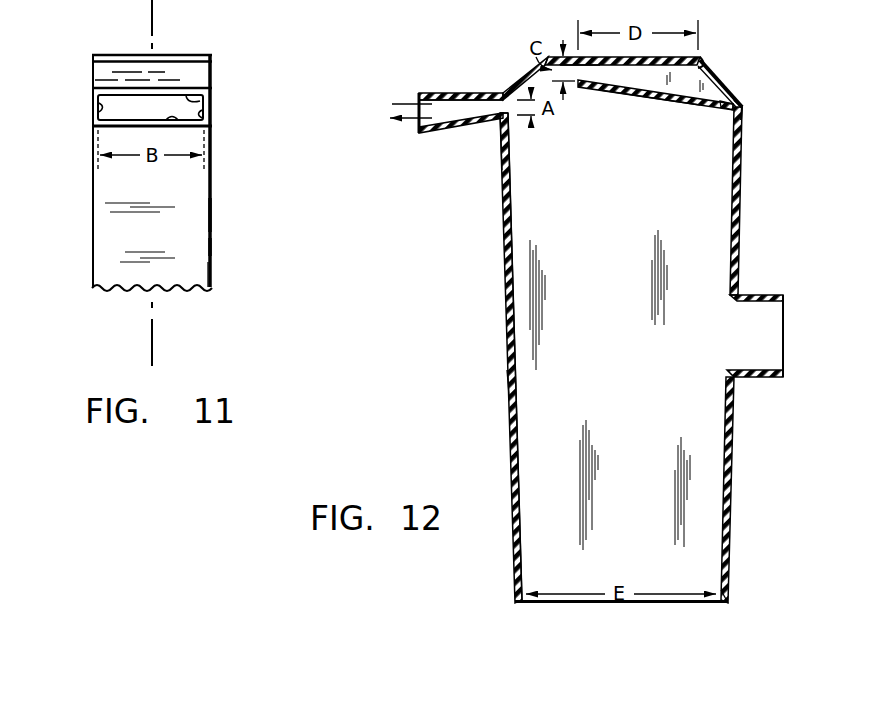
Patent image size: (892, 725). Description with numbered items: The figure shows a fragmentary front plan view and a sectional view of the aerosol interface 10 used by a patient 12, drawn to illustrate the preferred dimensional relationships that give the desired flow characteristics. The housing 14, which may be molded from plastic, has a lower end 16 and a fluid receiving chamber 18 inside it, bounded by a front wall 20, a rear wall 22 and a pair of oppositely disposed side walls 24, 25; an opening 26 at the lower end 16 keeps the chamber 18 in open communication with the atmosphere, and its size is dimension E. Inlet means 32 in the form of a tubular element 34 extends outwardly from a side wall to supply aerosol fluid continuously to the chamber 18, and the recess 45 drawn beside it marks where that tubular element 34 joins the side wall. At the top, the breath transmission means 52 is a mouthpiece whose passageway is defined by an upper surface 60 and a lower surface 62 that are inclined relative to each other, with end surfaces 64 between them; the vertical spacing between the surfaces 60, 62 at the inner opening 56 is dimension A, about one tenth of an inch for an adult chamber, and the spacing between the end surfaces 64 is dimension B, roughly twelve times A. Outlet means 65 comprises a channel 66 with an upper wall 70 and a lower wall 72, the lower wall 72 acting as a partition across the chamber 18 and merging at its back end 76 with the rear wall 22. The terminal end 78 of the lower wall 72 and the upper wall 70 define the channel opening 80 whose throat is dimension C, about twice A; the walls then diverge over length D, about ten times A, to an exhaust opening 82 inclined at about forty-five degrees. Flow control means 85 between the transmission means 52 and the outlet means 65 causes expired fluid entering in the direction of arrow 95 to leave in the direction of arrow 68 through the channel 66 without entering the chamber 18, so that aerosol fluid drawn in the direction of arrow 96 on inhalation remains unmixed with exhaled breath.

In FIG. 11, the aerosol interface 10 is at (229, 58).
In FIG. 12, the aerosol interface 10 is at (749, 243).
In FIG. 11, the patient 12 is at (163, 13).
In FIG. 11, the housing 14 is at (218, 214).
In FIG. 12, the housing 14 is at (505, 516).
In FIG. 12, the lower end 16 is at (722, 606).
In FIG. 12, the fluid receiving chamber 18 is at (610, 345).
In FIG. 11, the front wall 20 is at (197, 273).
In FIG. 12, the front wall 20 is at (503, 317).
In FIG. 12, the rear wall 22 is at (735, 490).
In FIG. 11, the side wall 24 is at (213, 248).
In FIG. 11, the side wall 25 is at (92, 222).
In FIG. 12, the side wall 25 is at (525, 380).
In FIG. 12, the opening 26 is at (722, 573).
In FIG. 12, the inlet means 32 is at (762, 292).
In FIG. 12, the tubular element 34 is at (758, 378).
In FIG. 12, the recess 45 is at (760, 333).
In FIG. 11, the breath transmission means 52 is at (90, 90).
In FIG. 12, the breath transmission means 52 is at (456, 92).
In FIG. 12, the inner opening 56 is at (497, 108).
In FIG. 11, the upper surface 60 is at (200, 101).
In FIG. 12, the upper surface 60 is at (468, 100).
In FIG. 11, the lower surface 62 is at (166, 118).
In FIG. 12, the lower surface 62 is at (450, 118).
In FIG. 11, the end surfaces 64 is at (99, 112).
In FIG. 12, the outlet means 65 is at (648, 88).
In FIG. 12, the channel 66 is at (717, 91).
In FIG. 12, the arrow 68 is at (737, 80).
In FIG. 12, the upper wall 70 is at (706, 66).
In FIG. 12, the lower wall 72 is at (686, 96).
In FIG. 12, the back end 76 is at (745, 106).
In FIG. 12, the terminal end 78 is at (578, 86).
In FIG. 12, the channel opening 80 is at (586, 74).
In FIG. 12, the exhaust opening 82 is at (713, 72).
In FIG. 12, the flow control means 85 is at (518, 78).
In FIG. 12, the arrow 95 is at (402, 100).
In FIG. 12, the arrow 96 is at (403, 122).